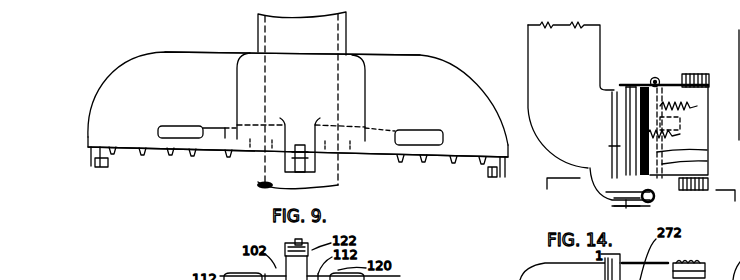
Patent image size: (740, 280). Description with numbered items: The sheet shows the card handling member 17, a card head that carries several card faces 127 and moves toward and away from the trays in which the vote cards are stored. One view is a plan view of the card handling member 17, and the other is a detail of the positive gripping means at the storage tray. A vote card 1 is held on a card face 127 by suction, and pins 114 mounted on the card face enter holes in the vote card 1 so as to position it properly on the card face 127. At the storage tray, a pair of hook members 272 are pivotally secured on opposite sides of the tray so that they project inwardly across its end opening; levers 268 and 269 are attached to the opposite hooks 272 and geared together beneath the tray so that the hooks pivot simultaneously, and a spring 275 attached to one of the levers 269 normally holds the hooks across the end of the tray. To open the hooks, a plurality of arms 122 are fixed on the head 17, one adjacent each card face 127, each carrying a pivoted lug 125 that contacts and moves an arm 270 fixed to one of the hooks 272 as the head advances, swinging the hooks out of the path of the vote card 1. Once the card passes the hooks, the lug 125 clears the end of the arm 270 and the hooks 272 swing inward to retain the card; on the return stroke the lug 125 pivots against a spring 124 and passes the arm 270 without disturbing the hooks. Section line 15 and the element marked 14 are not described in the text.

In FIG. 14, the vote card 1 is at (625, 80).
In FIG. 9, the pipe 14 is at (258, 177).
In FIG. 14, the section line 15 is at (643, 197).
In FIG. 9, the card handling member 17 is at (402, 52).
In FIG. 14, the card handling member 17 is at (528, 44).
In FIG. 9, the pins 114 is at (228, 152).
In FIG. 14, the arms 122 is at (614, 198).
In FIG. 14, the spring 124 is at (626, 207).
In FIG. 14, the pivoted lug 125 is at (614, 207).
In FIG. 14, the card face 127 is at (613, 100).
In FIG. 14, the lever 268 is at (704, 145).
In FIG. 14, the lever 269 is at (705, 80).
In FIG. 14, the arm 270 is at (665, 152).
In FIG. 14, the hook members 272 is at (634, 83).
In FIG. 14, the spring 275 is at (704, 100).